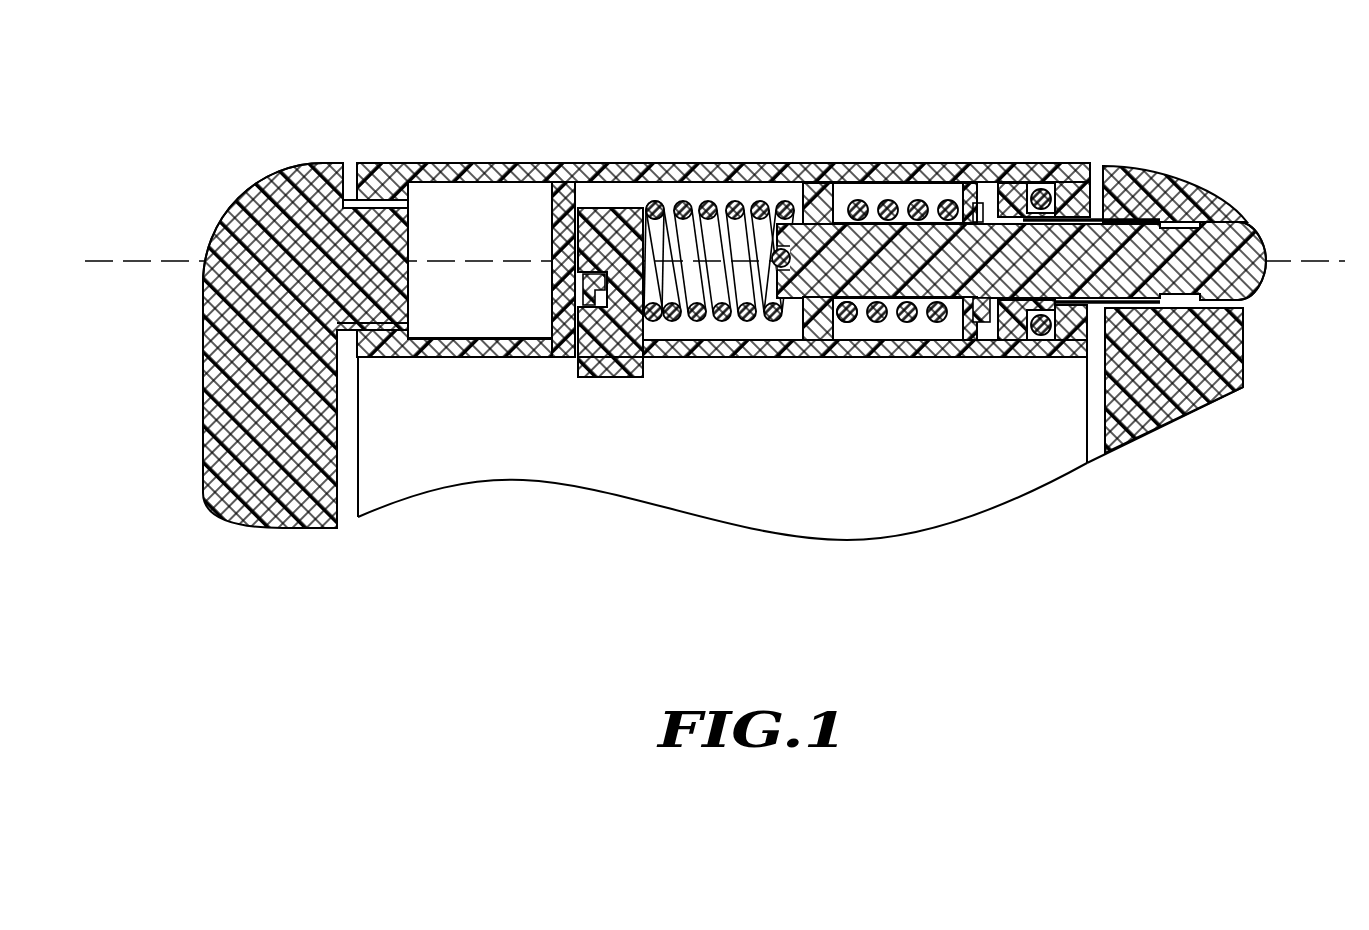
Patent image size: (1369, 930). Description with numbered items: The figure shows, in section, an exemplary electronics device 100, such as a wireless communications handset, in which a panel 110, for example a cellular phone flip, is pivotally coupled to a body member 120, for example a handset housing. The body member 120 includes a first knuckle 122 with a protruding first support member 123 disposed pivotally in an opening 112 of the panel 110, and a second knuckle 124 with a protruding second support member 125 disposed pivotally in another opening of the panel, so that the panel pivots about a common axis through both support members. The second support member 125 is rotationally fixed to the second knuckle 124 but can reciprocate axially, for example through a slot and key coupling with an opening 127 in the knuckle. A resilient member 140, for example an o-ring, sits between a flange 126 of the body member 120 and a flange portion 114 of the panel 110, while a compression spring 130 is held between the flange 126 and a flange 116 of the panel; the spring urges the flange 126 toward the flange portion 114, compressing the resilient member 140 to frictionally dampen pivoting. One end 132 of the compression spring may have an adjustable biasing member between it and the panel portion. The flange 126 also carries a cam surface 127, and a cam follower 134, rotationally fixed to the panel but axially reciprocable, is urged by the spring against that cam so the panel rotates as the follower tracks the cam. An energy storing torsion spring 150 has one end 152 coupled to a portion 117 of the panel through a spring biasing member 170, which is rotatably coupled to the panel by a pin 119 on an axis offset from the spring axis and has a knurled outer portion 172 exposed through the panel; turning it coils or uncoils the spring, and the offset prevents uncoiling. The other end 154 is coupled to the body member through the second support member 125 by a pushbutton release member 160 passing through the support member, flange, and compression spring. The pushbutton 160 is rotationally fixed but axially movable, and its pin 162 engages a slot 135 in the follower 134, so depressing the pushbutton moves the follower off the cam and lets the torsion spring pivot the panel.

The electronics device 100 is at (1232, 61).
The panel 110 is at (821, 522).
The opening 112 is at (396, 205).
The flange portion 114 is at (1069, 340).
The flange 116 is at (843, 198).
The portion of the panel 117 is at (563, 183).
The pin 119 is at (586, 290).
The body member 120 is at (218, 352).
The first knuckle 122 is at (268, 186).
The first support member 123 is at (390, 290).
The second knuckle 124 is at (1143, 178).
The second support member 125 is at (1097, 215).
The flange 126 is at (1015, 195).
The cam surface 127 is at (1147, 223).
The compression spring 130 is at (874, 326).
The end of the compression spring 132 is at (844, 323).
The cam follower 134 is at (967, 185).
The slot 135 is at (978, 224).
The resilient member 140 is at (1042, 192).
The torsion spring 150 is at (724, 192).
The end of the torsion spring 152 is at (653, 200).
The end of the torsion spring 154 is at (785, 200).
The pushbutton release member 160 is at (1246, 232).
The pin 162 is at (980, 201).
The spring biasing member 170 is at (593, 384).
The outer portion 172 is at (620, 378).